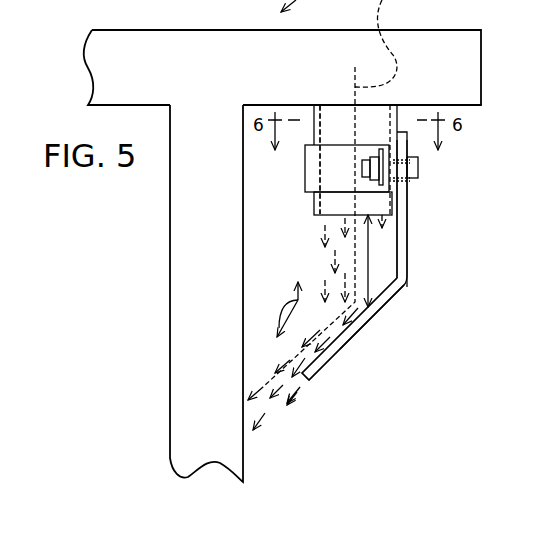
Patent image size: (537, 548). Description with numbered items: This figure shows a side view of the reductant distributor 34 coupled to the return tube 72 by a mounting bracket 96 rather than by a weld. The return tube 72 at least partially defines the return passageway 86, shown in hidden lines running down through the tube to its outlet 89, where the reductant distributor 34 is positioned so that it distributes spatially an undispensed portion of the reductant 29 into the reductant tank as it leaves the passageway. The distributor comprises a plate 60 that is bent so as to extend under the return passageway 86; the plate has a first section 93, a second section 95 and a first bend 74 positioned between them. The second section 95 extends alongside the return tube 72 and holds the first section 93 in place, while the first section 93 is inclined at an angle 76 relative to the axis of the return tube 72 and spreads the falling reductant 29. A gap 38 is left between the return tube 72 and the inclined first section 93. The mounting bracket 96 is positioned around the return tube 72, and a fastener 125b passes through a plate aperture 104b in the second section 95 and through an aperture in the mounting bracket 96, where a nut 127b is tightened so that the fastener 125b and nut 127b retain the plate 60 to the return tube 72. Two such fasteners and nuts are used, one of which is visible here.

The reductant 29 is at (275, 414).
The reductant distributor 34 is at (408, 314).
The gap 38 is at (368, 275).
The plate 60 is at (364, 362).
The return tube 72 is at (378, 205).
The first bend 74 is at (410, 287).
The angle 76 is at (281, 303).
The return passageway 86 is at (322, 128).
The outlet 89 is at (327, 224).
The first section 93 is at (370, 324).
The second section 95 is at (407, 245).
The mounting bracket 96 is at (312, 178).
The plate aperture 104b is at (400, 178).
The fastener 125b is at (418, 165).
The nut 127b is at (379, 151).